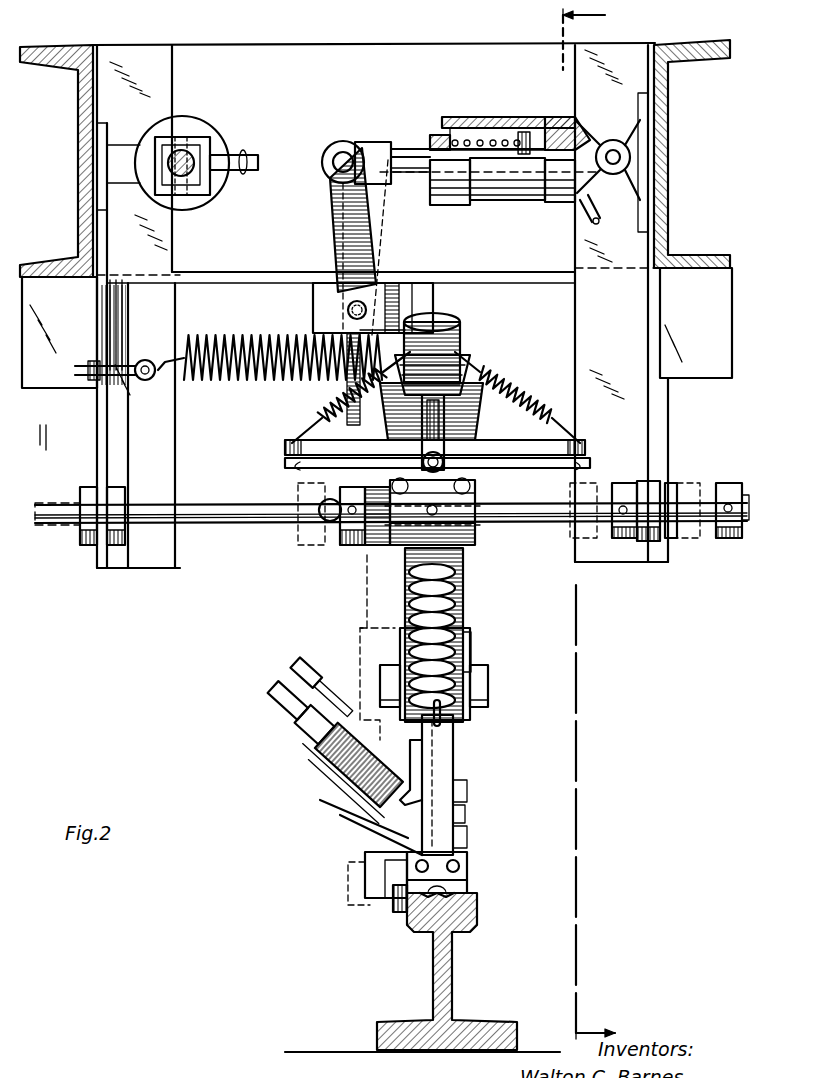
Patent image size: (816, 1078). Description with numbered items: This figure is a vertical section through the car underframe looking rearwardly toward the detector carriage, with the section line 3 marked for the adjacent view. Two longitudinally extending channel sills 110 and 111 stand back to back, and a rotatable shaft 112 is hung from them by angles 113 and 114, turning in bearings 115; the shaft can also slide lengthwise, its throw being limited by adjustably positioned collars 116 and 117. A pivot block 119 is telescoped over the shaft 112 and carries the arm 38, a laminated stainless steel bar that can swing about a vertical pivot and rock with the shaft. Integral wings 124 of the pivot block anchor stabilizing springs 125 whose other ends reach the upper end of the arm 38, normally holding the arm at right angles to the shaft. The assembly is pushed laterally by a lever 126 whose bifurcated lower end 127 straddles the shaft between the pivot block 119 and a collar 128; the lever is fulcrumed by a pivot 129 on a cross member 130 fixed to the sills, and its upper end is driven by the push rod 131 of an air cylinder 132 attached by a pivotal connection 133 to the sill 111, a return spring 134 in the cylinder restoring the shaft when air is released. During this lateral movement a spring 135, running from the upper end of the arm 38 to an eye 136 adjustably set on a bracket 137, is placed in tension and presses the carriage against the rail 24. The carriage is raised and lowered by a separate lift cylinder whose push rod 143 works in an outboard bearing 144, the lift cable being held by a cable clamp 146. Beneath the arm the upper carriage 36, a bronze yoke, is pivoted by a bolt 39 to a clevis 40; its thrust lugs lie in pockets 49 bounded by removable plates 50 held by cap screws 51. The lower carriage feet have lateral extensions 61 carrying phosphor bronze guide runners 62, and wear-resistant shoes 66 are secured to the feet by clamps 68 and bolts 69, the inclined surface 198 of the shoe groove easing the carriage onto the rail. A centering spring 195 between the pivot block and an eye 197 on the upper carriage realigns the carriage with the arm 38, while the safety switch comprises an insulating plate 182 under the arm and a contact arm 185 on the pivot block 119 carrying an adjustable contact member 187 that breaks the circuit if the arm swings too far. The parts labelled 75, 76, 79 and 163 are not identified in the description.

The section line 3- 3 is at (597, 524).
The rail 24 is at (433, 985).
The upper top carriage 36 is at (445, 752).
The arm 38 is at (460, 325).
The bolt 39 is at (484, 690).
The clevis 40 is at (465, 655).
The pockets 49 is at (465, 812).
The removable plates 50 is at (467, 835).
The cap screws 51 is at (467, 795).
The lateral extensions 61 is at (385, 876).
The guide runners 62 is at (393, 905).
The shoes 66 is at (467, 887).
The clamps 68 is at (467, 872).
The bolts 69 is at (459, 862).
The cylinder 75 is at (340, 757).
The rod 76 is at (395, 828).
The rod 79 is at (380, 815).
The sill 110 is at (72, 35).
The sill 111 is at (680, 42).
The rotatable shaft 112 is at (225, 527).
The angle 113 is at (172, 466).
The angle 114 is at (644, 420).
The bearings 115 is at (88, 548).
The collar 116 is at (728, 540).
The collar 117 is at (628, 540).
The pivot block 119 is at (470, 528).
The wings 124 is at (290, 444).
The stabilizing springs 125 is at (325, 410).
The lever 126 is at (335, 225).
The bifurcated lower end 127 is at (372, 560).
The collar 128 is at (335, 545).
The fulcrum 129 is at (365, 303).
The cross member 130 is at (520, 268).
The push rod 131 is at (400, 158).
The air cylinder 132 is at (505, 122).
The pivotal connection 133 is at (613, 150).
The return spring 134 is at (480, 140).
The spring 135 is at (238, 385).
The eye 136 is at (135, 380).
The bracket 137 is at (121, 297).
The push rod 143 is at (190, 172).
The outboard bearing 144 is at (195, 122).
The cable clamp 146 is at (255, 160).
The cam 163 is at (460, 372).
The insulating plate 182 is at (490, 418).
The contact arm 185 is at (455, 430).
The contact member 187 is at (485, 390).
The centering spring 195 is at (455, 645).
The eye 197 is at (440, 722).
The inclined surface 198 is at (432, 897).